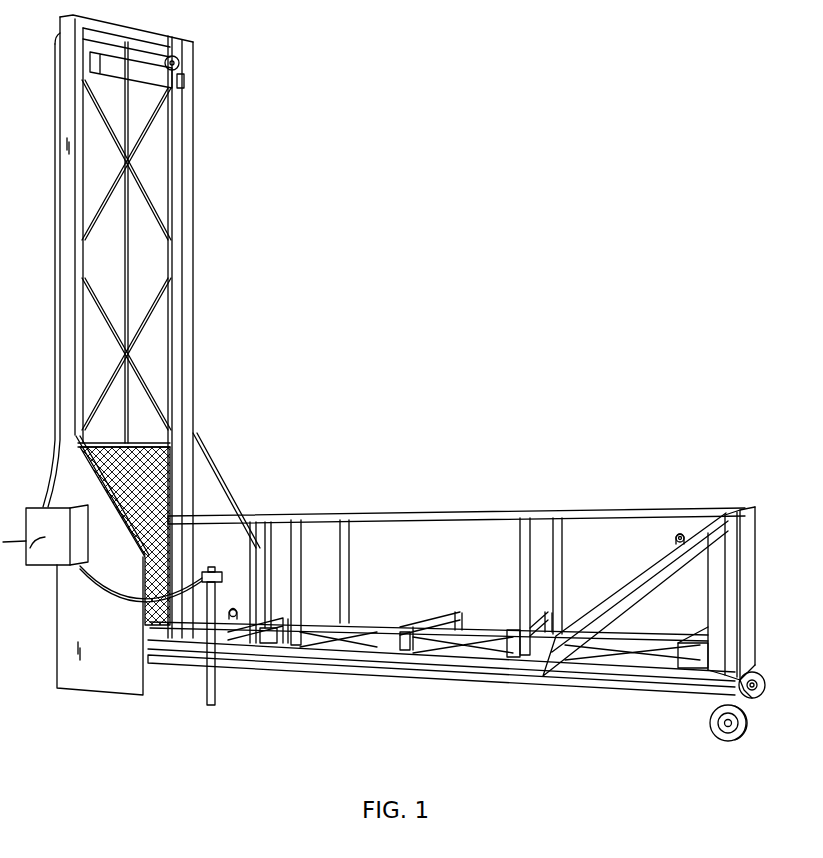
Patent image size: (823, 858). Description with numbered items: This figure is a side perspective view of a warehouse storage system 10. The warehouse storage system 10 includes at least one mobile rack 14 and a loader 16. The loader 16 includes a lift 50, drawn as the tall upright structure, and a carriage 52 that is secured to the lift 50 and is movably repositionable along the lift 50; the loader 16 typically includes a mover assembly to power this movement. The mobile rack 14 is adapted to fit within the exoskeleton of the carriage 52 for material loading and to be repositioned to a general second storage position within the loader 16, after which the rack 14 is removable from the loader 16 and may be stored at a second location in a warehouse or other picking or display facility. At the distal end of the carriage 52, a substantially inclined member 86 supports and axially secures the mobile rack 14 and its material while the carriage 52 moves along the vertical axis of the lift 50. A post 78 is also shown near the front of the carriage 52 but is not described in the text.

The warehouse storage system 10 is at (412, 223).
The mobile rack 14 is at (427, 657).
The loader 16 is at (75, 613).
The lift 50 is at (67, 236).
The carriage 52 is at (277, 663).
The post 78 is at (222, 582).
The inclined member 86 is at (737, 600).